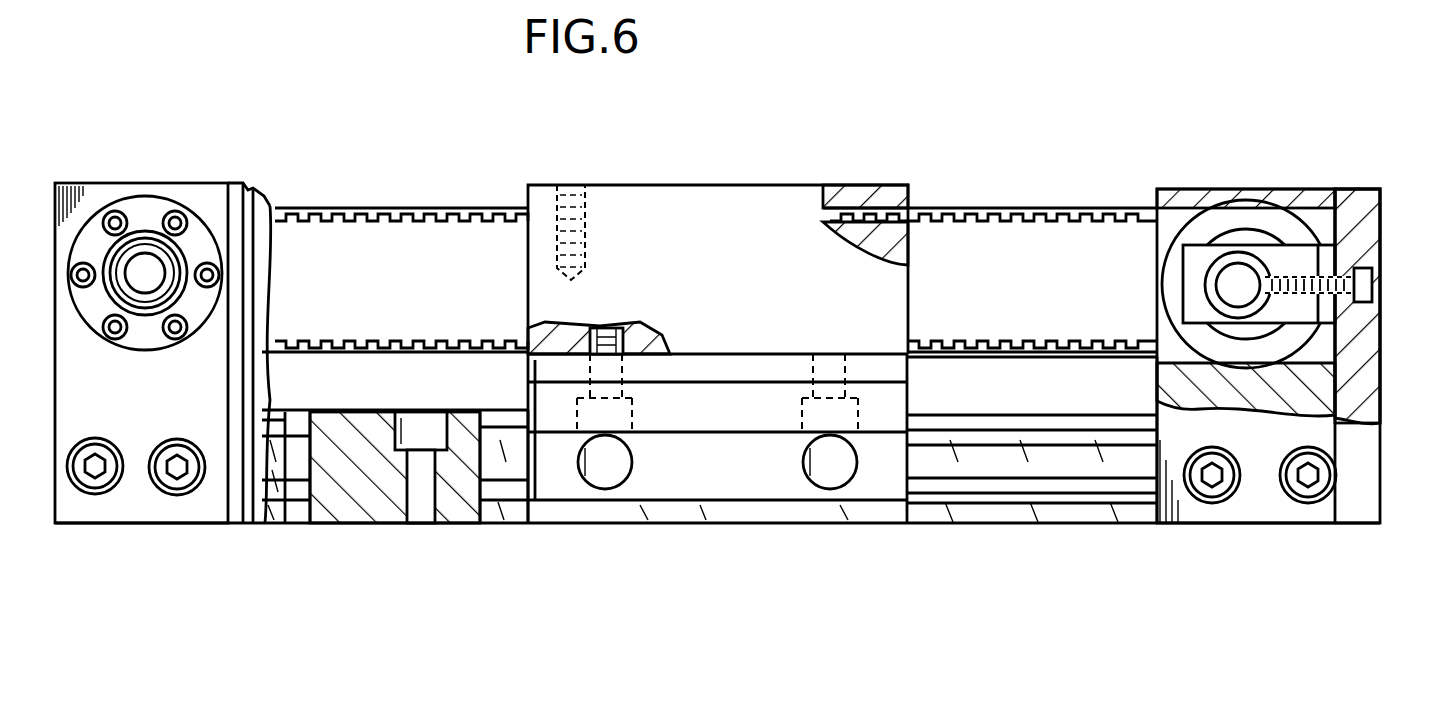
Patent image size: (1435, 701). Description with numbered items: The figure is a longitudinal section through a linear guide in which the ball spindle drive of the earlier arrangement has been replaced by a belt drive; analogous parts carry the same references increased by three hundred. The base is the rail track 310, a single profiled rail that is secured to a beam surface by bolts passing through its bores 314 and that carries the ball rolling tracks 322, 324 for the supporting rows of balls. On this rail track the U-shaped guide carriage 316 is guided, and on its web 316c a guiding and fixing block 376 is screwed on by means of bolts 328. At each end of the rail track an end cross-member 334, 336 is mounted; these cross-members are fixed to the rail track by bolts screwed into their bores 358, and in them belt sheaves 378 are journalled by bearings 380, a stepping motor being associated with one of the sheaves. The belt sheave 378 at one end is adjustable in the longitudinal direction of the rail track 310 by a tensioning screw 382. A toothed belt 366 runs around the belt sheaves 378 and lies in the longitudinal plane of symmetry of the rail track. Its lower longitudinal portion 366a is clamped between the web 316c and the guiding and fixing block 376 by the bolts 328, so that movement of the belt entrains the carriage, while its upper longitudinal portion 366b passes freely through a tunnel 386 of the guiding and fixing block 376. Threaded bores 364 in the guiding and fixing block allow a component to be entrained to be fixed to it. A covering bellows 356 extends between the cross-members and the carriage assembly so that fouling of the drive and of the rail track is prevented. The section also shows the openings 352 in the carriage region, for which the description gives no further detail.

The rail track 310 is at (370, 498).
The bores of the rail track 314 is at (422, 508).
The guide carriage 316 is at (695, 500).
The web of the guide carriage 316c is at (907, 368).
The ball rolling track 322 is at (267, 520).
The ball rolling track 324 is at (296, 500).
The bolts 328 is at (632, 409).
The end cross-member 334 is at (95, 190).
The end cross-member 336 is at (1272, 190).
The carriage mounting holes 352 is at (601, 482).
The covering bellows 356 is at (254, 190).
The bores of the cross-members 358 is at (178, 482).
The threaded bores 364 is at (571, 192).
The toothed belt 366 is at (420, 207).
The lower longitudinal portion of the toothed belt 366a is at (1065, 341).
The upper longitudinal portion of the toothed belt 366b is at (1003, 213).
The guiding and fixing block 376 is at (696, 200).
The belt sheave 378 is at (1222, 224).
The bearing 380 is at (145, 270).
The tensioning screw 382 is at (1373, 285).
The tunnel 386 is at (878, 212).